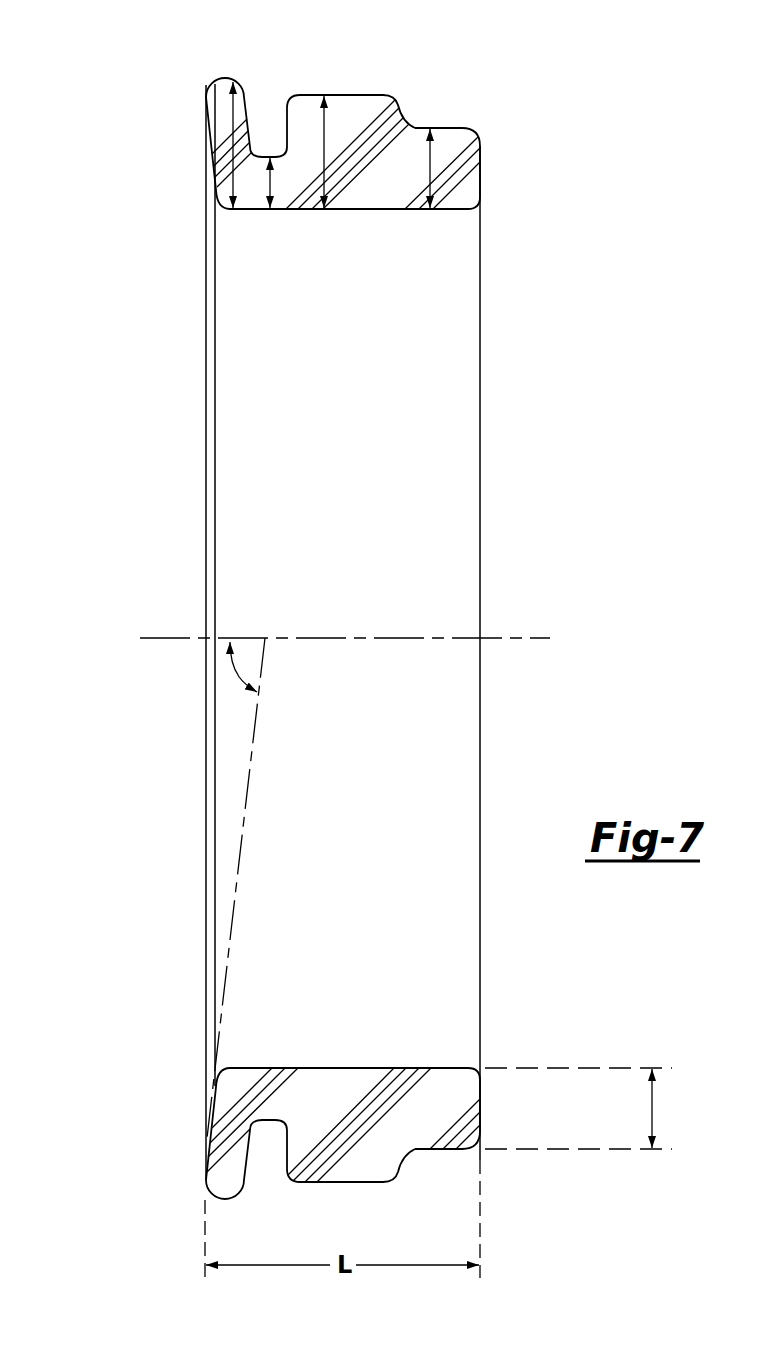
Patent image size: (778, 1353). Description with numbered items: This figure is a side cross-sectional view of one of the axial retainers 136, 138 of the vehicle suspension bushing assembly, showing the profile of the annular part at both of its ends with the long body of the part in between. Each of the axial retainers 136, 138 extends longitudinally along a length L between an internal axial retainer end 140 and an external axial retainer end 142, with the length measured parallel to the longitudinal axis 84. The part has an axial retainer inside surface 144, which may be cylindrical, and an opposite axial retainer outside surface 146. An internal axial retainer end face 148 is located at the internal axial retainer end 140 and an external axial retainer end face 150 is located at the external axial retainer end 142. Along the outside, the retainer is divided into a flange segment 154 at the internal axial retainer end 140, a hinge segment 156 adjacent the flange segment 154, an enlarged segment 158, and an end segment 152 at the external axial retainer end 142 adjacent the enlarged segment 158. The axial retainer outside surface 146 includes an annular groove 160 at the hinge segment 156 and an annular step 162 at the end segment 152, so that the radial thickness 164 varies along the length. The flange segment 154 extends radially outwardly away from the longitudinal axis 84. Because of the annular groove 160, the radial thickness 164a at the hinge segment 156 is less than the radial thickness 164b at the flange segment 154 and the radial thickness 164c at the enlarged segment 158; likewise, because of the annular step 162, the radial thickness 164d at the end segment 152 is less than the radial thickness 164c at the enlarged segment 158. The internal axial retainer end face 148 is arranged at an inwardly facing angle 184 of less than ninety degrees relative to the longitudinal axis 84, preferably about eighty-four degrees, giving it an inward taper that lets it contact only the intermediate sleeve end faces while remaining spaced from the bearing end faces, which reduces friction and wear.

The longitudinal axis 84 is at (363, 638).
The first axial retainer 136 is at (408, 624).
The second axial retainer 138 is at (408, 631).
The internal axial retainer end 140 is at (230, 370).
The external axial retainer end 142 is at (455, 398).
The axial retainer inside surface 144 is at (340, 212).
The axial retainer outside surface 146 is at (363, 631).
The internal axial retainer end face 148 is at (207, 638).
The external axial retainer end face 150 is at (516, 627).
The end segment 152 is at (445, 157).
The flange segment 154 is at (215, 98).
The hinge segment 156 is at (253, 194).
The enlarged segment 158 is at (367, 113).
The annular groove 160 is at (272, 118).
The annular step 162 is at (460, 105).
The radial thickness 164 is at (653, 1110).
The radial thickness at the hinge segment 164a is at (287, 193).
The radial thickness at the flange segment 164b is at (233, 152).
The radial thickness at the enlarged segment 164c is at (324, 152).
The radial thickness at the end segment 164d is at (437, 165).
The inwardly facing angle 184 is at (230, 667).